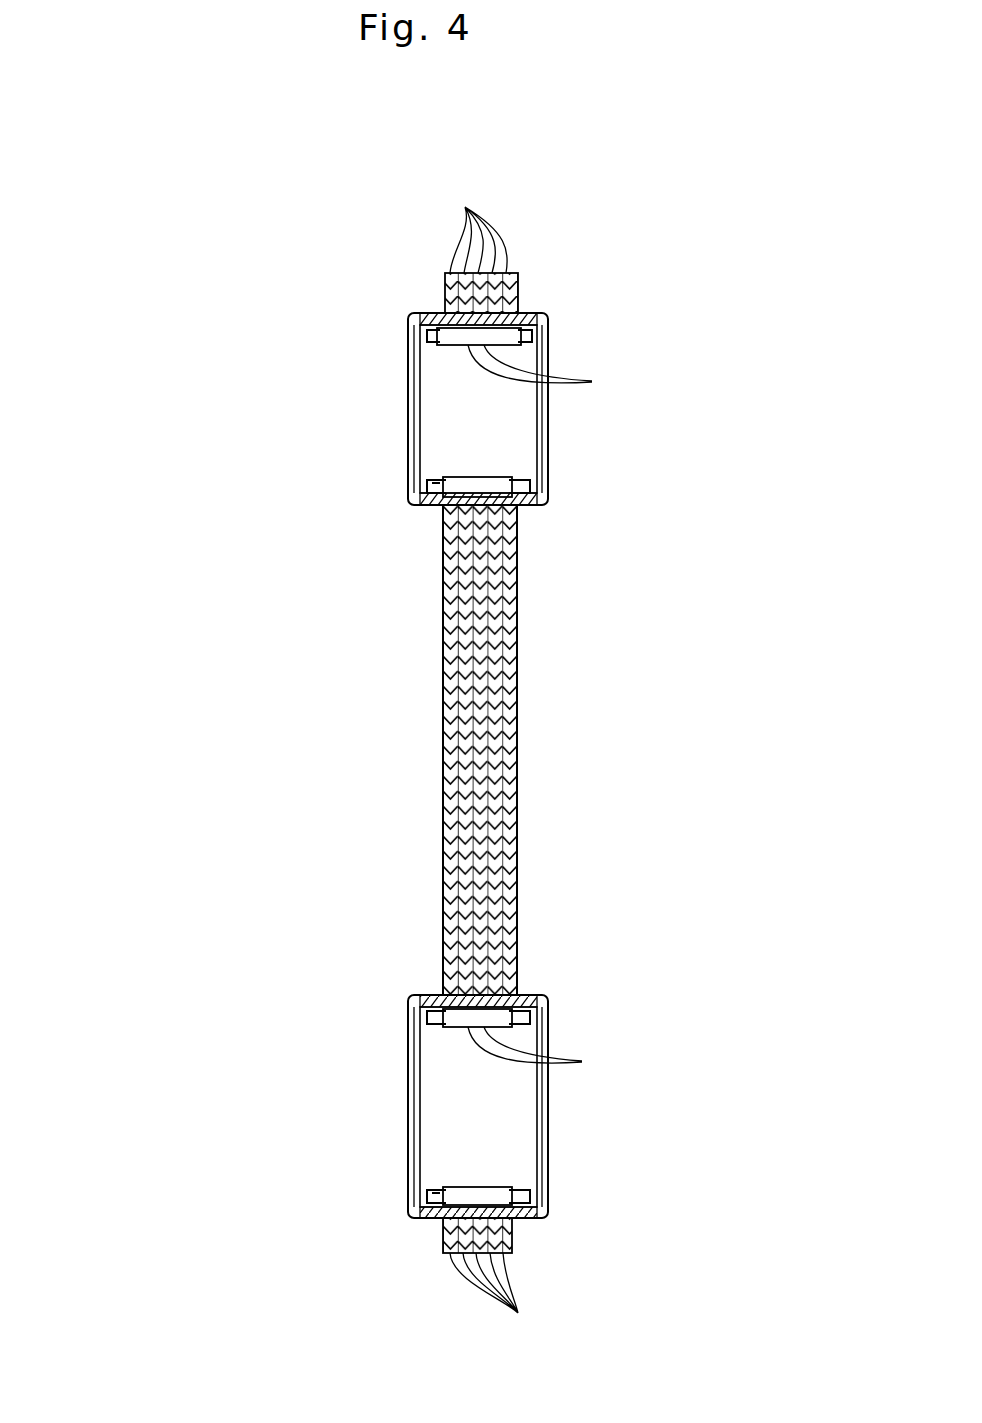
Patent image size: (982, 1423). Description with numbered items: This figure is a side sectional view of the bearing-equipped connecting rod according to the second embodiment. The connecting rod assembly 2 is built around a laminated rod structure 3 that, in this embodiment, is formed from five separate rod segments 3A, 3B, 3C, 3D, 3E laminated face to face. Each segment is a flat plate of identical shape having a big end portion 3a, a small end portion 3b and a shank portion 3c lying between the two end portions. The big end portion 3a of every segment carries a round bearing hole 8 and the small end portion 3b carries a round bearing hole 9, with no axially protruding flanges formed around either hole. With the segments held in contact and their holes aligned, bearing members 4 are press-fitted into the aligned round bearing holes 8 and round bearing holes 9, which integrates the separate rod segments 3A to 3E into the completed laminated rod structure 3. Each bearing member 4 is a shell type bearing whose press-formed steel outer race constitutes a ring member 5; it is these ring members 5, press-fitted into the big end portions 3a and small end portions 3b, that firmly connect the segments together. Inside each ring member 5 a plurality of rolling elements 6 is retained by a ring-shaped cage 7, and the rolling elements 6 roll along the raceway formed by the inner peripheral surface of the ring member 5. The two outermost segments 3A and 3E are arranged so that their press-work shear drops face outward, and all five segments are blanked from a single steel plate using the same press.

The connecting rod assembly 2 is at (190, 673).
The laminated rod structure 3 is at (255, 720).
The separate rod segment 3A is at (443, 705).
The separate rod segment 3B is at (443, 743).
The separate rod segment 3C is at (443, 770).
The separate rod segment 3D is at (443, 800).
The separate rod segment 3E is at (443, 825).
The big end portion 3a is at (504, 1282).
The small end portion 3b is at (481, 240).
The shank portion 3c is at (520, 822).
The bearing member 4 is at (566, 348).
The ring member 5 is at (433, 510).
The rolling element 6 is at (447, 350).
The ring-shaped cage 7 is at (422, 481).
The round bearing hole 8 is at (570, 1058).
The round bearing hole 9 is at (580, 378).